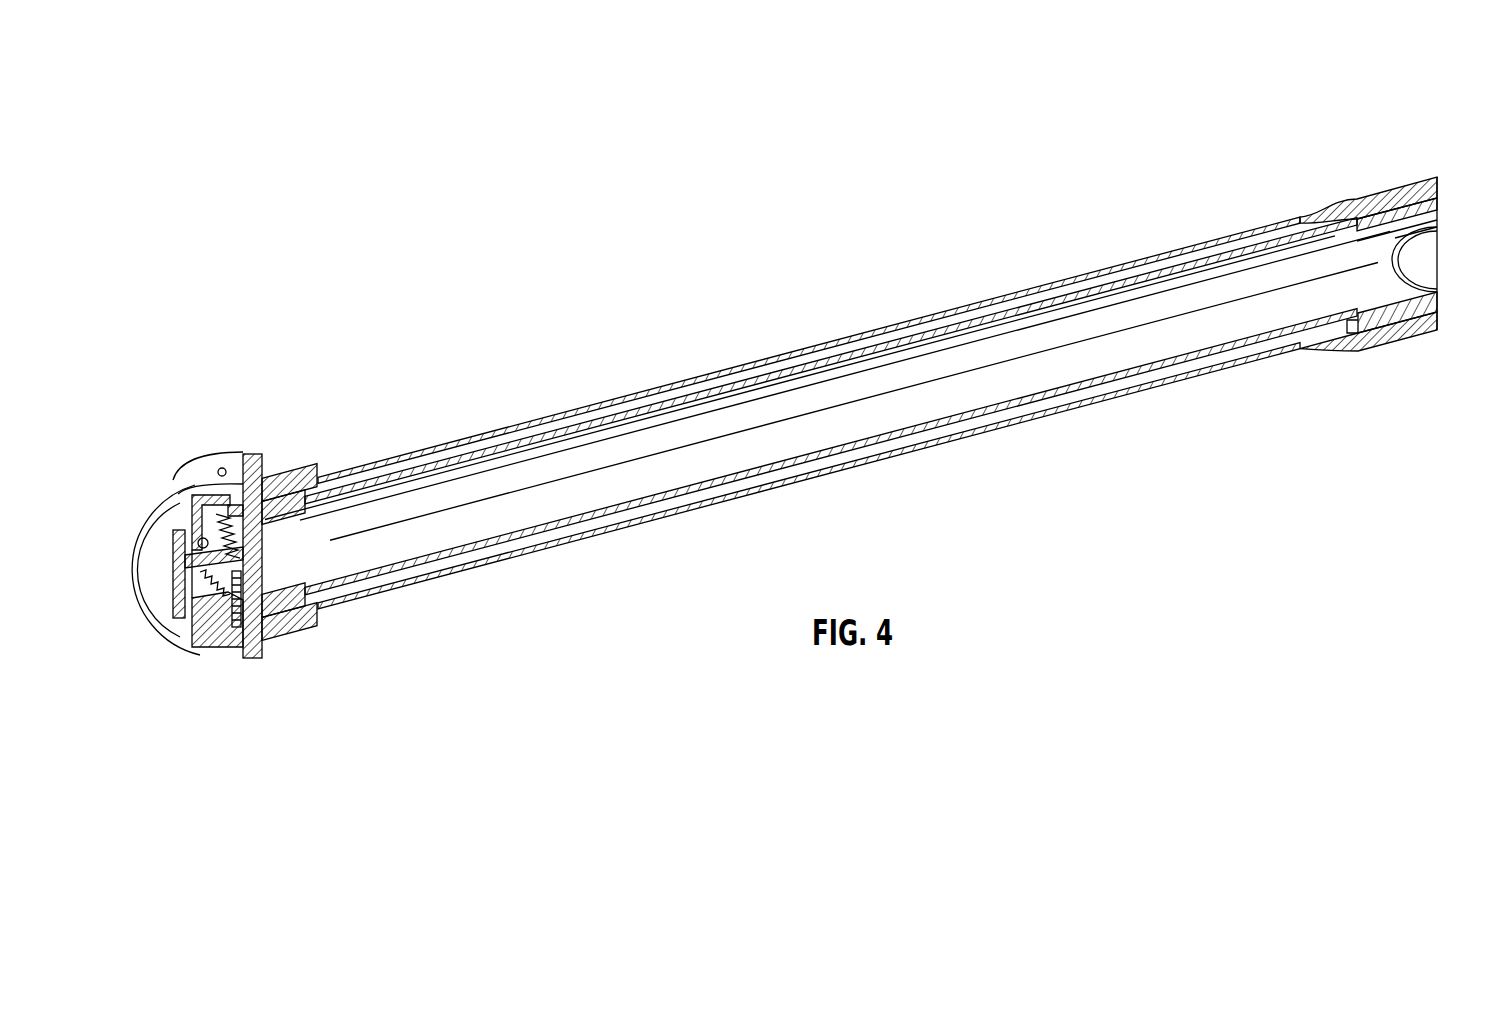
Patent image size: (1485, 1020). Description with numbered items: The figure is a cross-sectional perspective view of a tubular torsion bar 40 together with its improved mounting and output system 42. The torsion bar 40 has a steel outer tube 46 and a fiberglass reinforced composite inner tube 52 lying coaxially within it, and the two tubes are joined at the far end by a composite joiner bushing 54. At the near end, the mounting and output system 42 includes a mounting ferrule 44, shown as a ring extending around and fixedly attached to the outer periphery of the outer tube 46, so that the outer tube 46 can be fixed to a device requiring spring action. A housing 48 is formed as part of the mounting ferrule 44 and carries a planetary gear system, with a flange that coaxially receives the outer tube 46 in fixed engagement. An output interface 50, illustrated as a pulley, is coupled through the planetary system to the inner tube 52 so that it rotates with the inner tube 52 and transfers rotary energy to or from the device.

The tubular torsion bar 40 is at (921, 173).
The mounting and output system 42 is at (251, 419).
The mounting ferrule 44 is at (255, 454).
The outer tube 46 is at (890, 331).
The housing 48 is at (187, 490).
The output interface 50 is at (165, 602).
The inner tube 52 is at (975, 332).
The joiner bushing 54 is at (1398, 162).